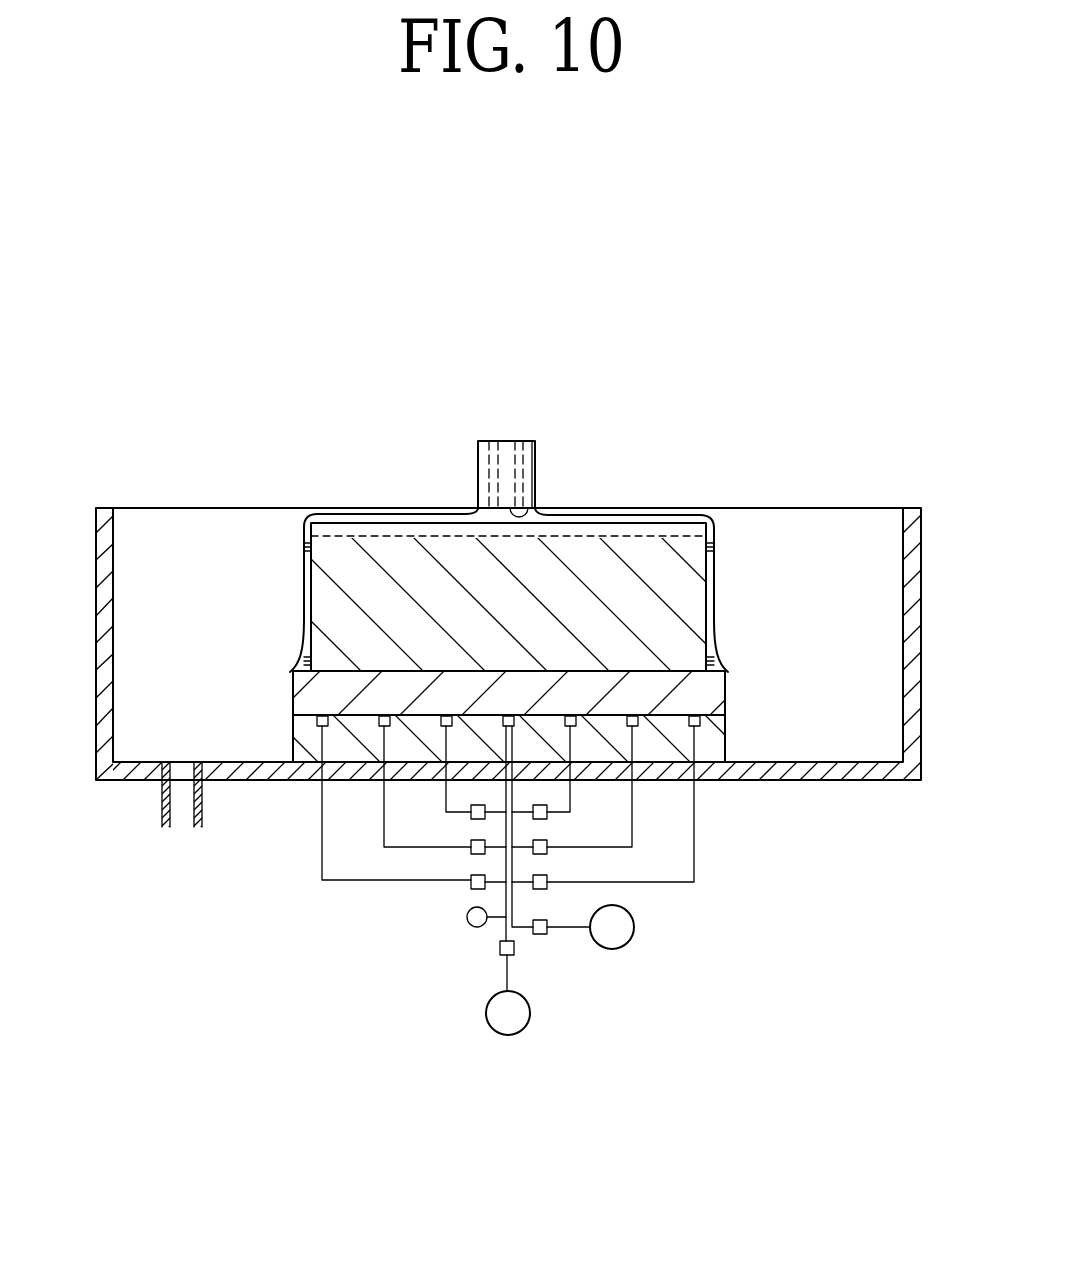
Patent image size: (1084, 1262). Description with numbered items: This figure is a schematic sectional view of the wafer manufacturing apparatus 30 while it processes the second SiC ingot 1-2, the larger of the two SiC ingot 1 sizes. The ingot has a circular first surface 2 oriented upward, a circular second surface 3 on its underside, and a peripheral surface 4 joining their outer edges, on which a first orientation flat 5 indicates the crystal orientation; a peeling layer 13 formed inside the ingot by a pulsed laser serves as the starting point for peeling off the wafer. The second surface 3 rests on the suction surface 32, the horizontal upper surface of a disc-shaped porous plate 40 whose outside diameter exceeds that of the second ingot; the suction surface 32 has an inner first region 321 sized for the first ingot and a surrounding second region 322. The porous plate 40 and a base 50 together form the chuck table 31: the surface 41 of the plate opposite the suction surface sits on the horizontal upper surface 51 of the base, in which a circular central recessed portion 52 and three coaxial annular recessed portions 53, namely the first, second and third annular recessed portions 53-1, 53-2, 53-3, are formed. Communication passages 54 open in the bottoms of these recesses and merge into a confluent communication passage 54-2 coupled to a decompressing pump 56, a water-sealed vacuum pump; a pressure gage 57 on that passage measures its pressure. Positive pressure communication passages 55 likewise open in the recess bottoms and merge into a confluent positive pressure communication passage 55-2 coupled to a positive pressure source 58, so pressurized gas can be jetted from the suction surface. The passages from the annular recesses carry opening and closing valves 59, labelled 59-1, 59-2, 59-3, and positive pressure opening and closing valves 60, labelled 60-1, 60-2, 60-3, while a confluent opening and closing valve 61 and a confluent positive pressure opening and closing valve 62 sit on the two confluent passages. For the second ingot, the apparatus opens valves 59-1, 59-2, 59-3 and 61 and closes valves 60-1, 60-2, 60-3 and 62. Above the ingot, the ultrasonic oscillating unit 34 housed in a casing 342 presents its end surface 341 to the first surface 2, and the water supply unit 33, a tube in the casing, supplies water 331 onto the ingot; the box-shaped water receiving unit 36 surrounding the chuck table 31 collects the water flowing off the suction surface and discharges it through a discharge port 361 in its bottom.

The wafer manufacturing apparatus 30 is at (581, 337).
The water receiving unit 36 is at (100, 518).
The discharge port 361 is at (160, 810).
The water supply unit 33 is at (488, 438).
The ultrasonic oscillating unit 34 is at (517, 438).
The casing 342 is at (535, 455).
The end surface 341 is at (529, 510).
The water 331 is at (370, 514).
The peripheral surface 4 is at (302, 562).
The SiC ingot 1 is at (716, 593).
The second SiC ingot 1-2 is at (714, 585).
The peeling layer 13 is at (640, 516).
The first surface 2 is at (634, 532).
The first orientation flat 5 is at (706, 614).
The suction surface 32 is at (680, 582).
The first region 321 is at (588, 619).
The second region 322 is at (688, 619).
The second surface 3 is at (725, 684).
The porous plate 40 is at (732, 690).
The base 50 is at (732, 730).
The chuck table 31 is at (826, 682).
The upper surface 51 is at (322, 714).
The surface 41 is at (360, 716).
The annular recessed portions 53 is at (398, 654).
The first annular recessed portion 53-1 is at (632, 716).
The second annular recessed portion 53-2 is at (570, 716).
The third annular recessed portion 53-3 is at (508, 716).
The central recessed portion 52 is at (694, 716).
The communication passages 54 is at (330, 897).
The positive pressure communication passages 55 is at (692, 897).
The opening and closing valve 59 is at (357, 865).
The first opening and closing valve 59-1 is at (465, 808).
The second opening and closing valve 59-2 is at (492, 836).
The third opening and closing valve 59-3 is at (470, 884).
The positive pressure opening and closing valve 60 is at (673, 865).
The first positive pressure opening and closing valve 60-1 is at (555, 808).
The second positive pressure opening and closing valve 60-2 is at (536, 836).
The third positive pressure opening and closing valve 60-3 is at (553, 884).
The confluent communication passage 54-2 is at (503, 975).
The confluent positive pressure communication passage 55-2 is at (572, 932).
The pressure gage 57 is at (468, 920).
The confluent opening and closing valve 61 is at (499, 950).
The decompressing pump 56 is at (508, 1030).
The confluent positive pressure opening and closing valve 62 is at (541, 936).
The positive pressure source 58 is at (622, 931).